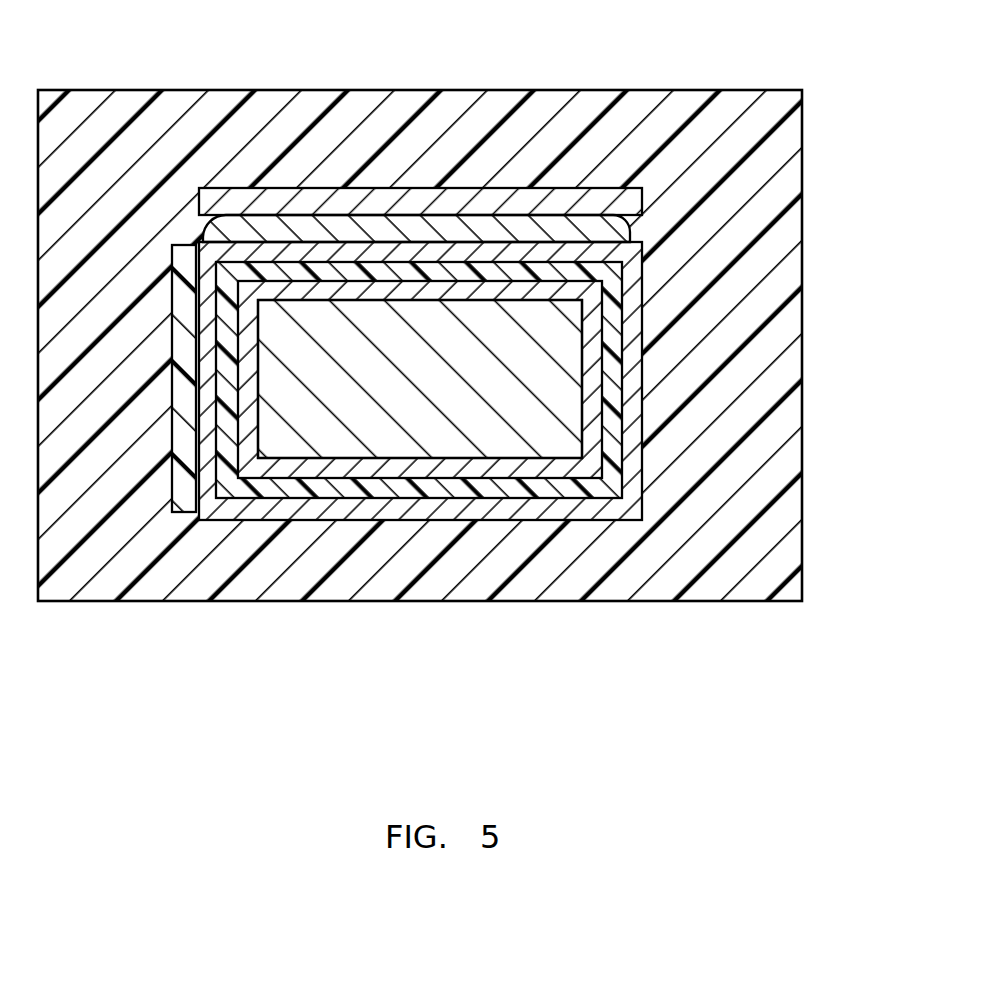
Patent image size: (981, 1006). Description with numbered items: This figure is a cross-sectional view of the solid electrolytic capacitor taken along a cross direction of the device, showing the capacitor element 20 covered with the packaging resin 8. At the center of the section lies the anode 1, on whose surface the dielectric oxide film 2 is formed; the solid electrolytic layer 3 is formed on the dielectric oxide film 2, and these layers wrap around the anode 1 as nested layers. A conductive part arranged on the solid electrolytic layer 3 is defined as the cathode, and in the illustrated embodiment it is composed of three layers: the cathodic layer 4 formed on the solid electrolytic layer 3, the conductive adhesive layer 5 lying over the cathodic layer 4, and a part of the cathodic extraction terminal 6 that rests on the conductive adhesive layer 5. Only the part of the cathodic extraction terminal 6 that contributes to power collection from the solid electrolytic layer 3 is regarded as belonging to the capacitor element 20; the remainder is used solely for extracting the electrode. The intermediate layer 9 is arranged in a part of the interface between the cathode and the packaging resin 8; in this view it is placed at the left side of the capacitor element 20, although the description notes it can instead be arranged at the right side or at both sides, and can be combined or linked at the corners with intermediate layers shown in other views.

The anode 1 is at (442, 443).
The dielectric oxide film 2 is at (350, 467).
The solid electrolytic layer 3 is at (562, 493).
The cathodic layer 4 is at (570, 252).
The conductive adhesive layer 5 is at (513, 232).
The cathodic extraction terminal 6 is at (425, 202).
The packaging resin 8 is at (255, 130).
The intermediate layer 9 is at (177, 482).
The capacitor element 20 is at (648, 498).